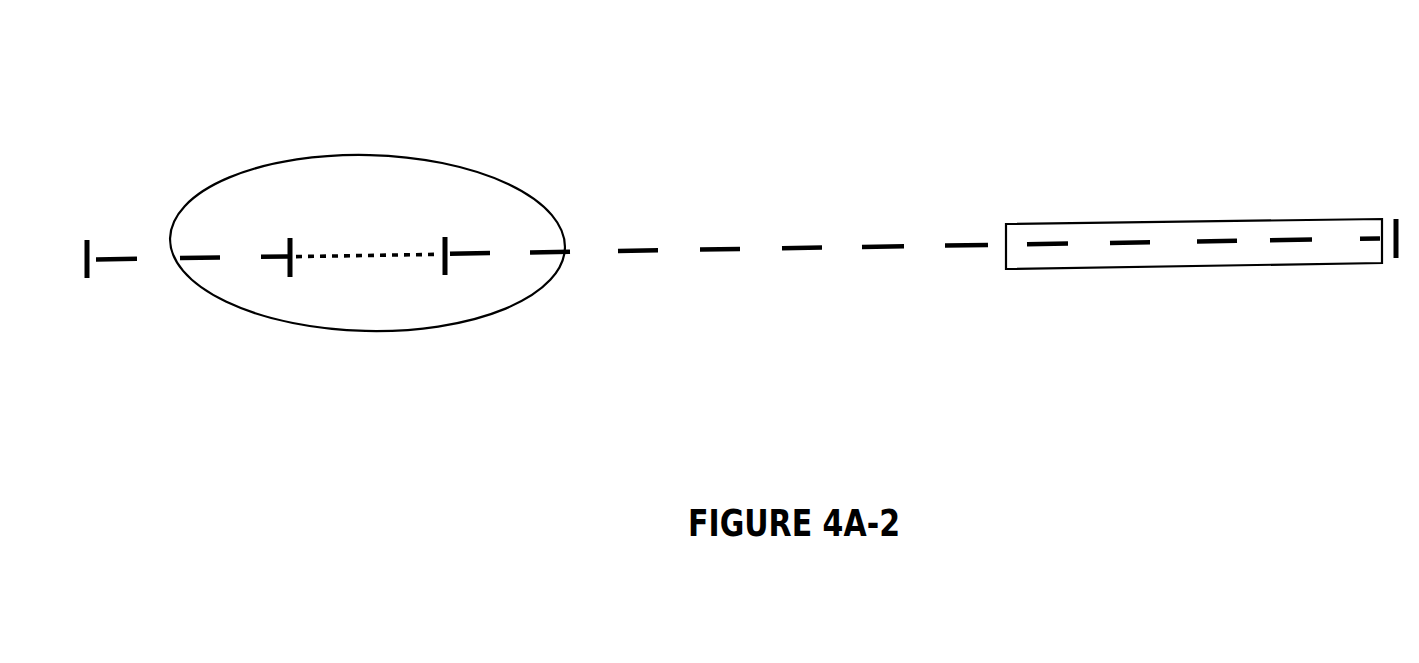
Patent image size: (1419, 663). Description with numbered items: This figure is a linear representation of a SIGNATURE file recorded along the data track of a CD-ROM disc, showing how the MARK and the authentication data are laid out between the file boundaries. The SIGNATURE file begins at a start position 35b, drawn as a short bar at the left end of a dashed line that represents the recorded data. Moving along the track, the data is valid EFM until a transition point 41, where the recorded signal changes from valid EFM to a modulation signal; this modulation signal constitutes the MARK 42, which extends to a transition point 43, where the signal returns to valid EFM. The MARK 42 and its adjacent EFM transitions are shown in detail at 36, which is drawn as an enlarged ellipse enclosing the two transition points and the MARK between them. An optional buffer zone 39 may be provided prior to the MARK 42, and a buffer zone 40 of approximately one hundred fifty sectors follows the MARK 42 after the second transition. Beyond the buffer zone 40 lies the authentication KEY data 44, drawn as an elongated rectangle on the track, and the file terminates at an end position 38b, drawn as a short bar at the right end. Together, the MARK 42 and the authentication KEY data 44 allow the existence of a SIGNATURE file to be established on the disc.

The start position 35b is at (87, 230).
The detail of the MARK and adjacent EFM transitions 36 is at (368, 148).
The buffer zone 39 is at (95, 288).
The buffer zone 40 is at (487, 237).
The transition point 41 is at (285, 216).
The MARK 42 is at (322, 280).
The transition point 43 is at (443, 216).
The authentication KEY data 44 is at (1012, 278).
The end position 38b is at (1396, 203).